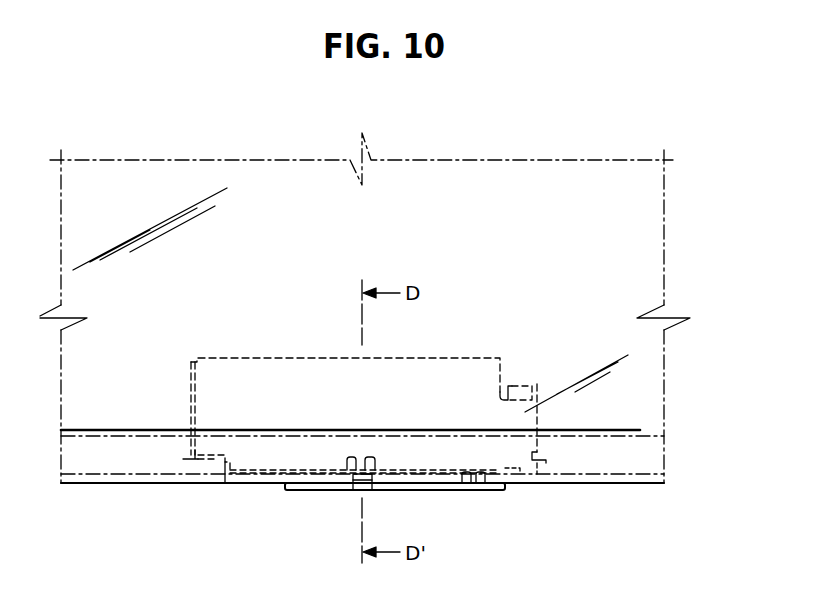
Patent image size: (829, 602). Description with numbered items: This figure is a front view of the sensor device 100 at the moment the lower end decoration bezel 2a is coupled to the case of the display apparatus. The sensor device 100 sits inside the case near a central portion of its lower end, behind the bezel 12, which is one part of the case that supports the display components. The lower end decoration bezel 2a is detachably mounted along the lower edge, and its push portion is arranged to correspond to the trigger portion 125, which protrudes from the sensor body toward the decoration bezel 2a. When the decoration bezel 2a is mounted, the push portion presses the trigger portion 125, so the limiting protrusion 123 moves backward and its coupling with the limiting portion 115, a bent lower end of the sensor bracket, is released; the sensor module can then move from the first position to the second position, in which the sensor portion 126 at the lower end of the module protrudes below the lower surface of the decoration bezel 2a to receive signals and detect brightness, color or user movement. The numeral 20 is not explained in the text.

The cabinet 20 is at (648, 236).
The bezel 12 is at (640, 430).
The lower end decoration bezel 2a is at (625, 489).
The sensor device 100 is at (507, 348).
The limiting portion 115 is at (240, 468).
The limiting protrusion 123 is at (360, 468).
The trigger portion 125 is at (358, 492).
The sensor portion 126 is at (442, 490).